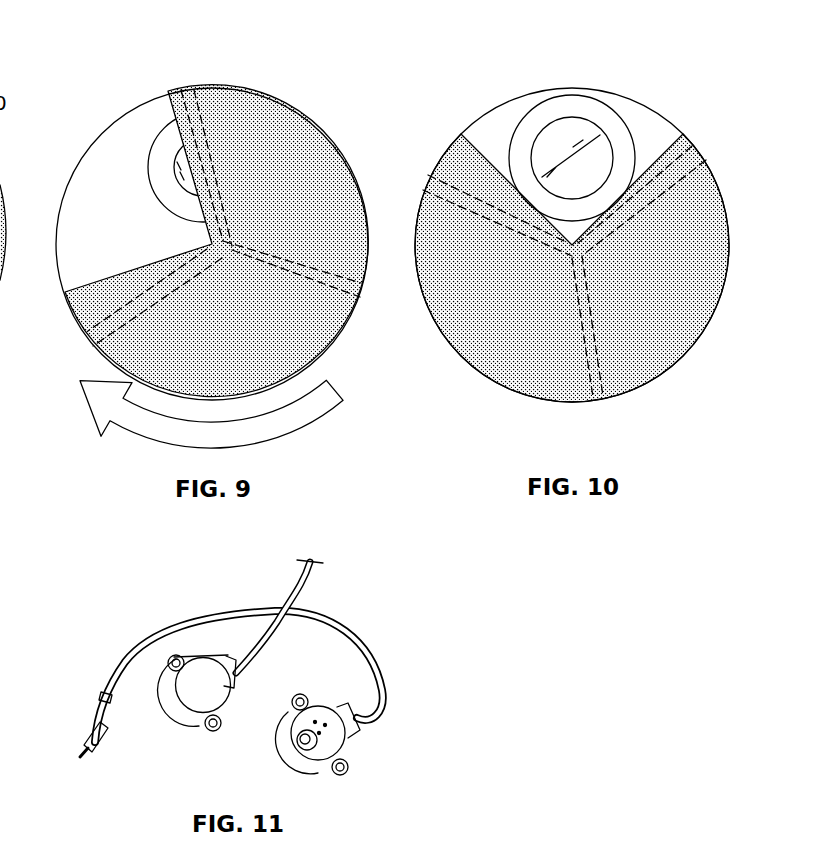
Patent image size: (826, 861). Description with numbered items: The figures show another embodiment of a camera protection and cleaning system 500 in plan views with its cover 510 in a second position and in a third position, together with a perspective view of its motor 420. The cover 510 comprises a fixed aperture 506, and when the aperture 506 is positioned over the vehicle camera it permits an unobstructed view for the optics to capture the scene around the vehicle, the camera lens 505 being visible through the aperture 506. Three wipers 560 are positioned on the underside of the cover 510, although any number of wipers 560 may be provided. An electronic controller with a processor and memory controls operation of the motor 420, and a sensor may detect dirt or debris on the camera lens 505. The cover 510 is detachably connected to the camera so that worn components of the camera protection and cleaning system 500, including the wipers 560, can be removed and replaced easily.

In FIG. 9, the camera protection and cleaning system 500 is at (148, 76).
In FIG. 10, the camera protection and cleaning system 500 is at (691, 66).
In FIG. 9, the camera lens 505 is at (173, 167).
In FIG. 10, the camera lens 505 is at (595, 137).
In FIG. 9, the fixed aperture 506 is at (80, 182).
In FIG. 10, the fixed aperture 506 is at (510, 112).
In FIG. 9, the cover 510 is at (221, 85).
In FIG. 10, the cover 510 is at (710, 320).
In FIG. 9, the wipers 560 is at (217, 183).
In FIG. 10, the wipers 560 is at (658, 190).
In FIG. 11, the motor 420 is at (188, 723).